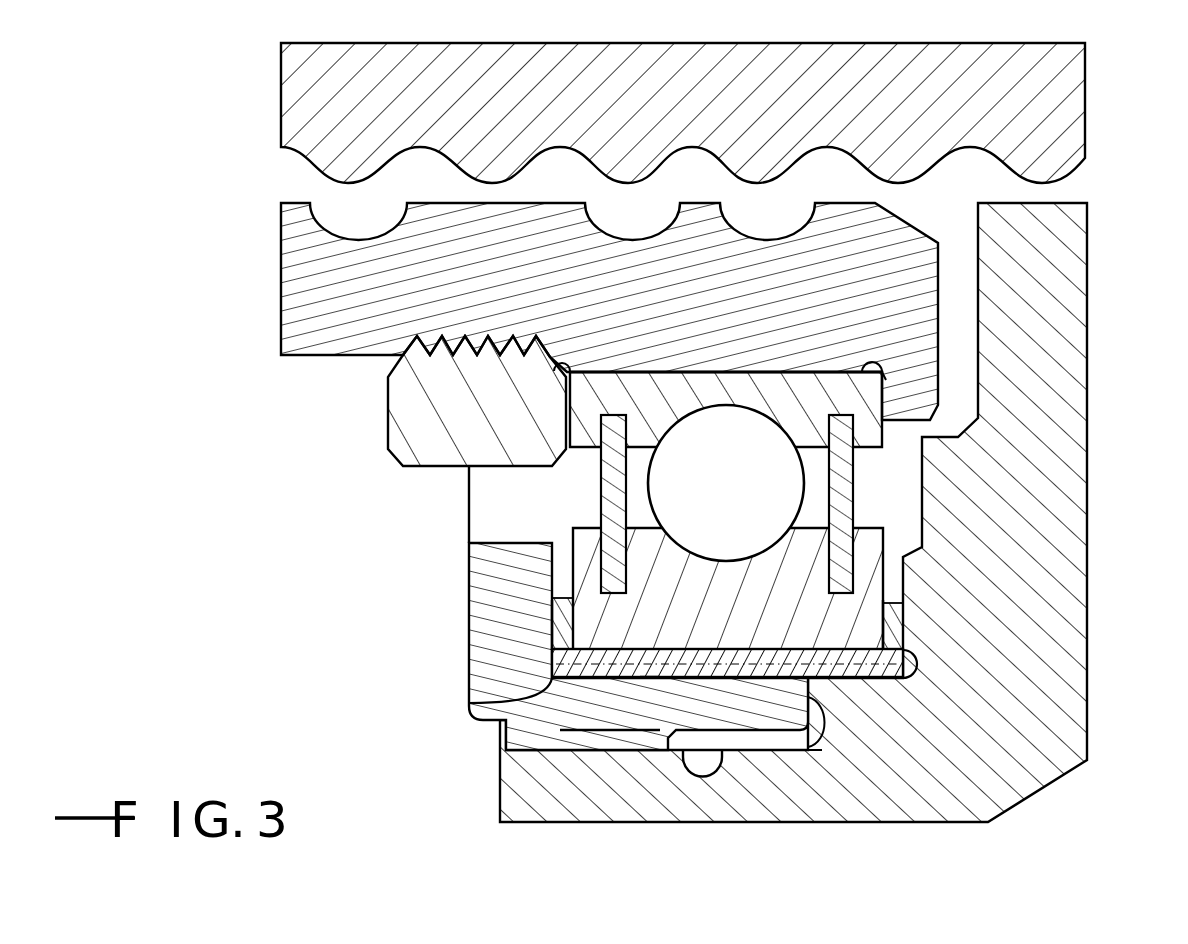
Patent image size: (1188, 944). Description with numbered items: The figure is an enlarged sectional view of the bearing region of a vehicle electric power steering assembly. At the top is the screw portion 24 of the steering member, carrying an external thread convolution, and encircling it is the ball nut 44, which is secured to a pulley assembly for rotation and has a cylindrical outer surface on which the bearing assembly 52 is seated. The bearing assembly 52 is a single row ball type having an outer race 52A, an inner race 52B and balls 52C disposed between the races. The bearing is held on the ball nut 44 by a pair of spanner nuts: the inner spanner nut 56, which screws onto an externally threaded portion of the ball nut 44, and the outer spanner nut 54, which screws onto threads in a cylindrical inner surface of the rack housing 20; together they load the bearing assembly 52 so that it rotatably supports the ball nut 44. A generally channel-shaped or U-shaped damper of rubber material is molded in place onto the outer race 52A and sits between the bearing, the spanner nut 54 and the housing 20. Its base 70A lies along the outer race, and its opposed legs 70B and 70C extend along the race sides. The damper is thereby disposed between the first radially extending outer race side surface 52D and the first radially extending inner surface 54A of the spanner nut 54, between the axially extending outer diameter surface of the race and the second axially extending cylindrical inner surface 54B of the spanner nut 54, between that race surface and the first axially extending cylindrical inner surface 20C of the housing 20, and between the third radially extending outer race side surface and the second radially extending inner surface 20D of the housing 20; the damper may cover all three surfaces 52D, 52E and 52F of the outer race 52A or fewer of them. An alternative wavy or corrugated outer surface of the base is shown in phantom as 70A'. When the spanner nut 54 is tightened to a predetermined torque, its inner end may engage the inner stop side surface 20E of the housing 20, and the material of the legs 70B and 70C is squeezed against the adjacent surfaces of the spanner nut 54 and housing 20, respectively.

The rack housing 20 is at (1097, 455).
The first generally axially extending cylindrical inner surface 20C is at (894, 680).
The second generally radially extending inner surface 20D is at (903, 605).
The inner stop side surface 20E is at (805, 700).
The screw portion 24 is at (1066, 126).
The ball nut 44 is at (320, 350).
The bearing assembly 52 is at (707, 362).
The outer race 52A is at (805, 632).
The inner race 52B is at (770, 383).
The balls 52C is at (758, 497).
The first generally radially extending outer race side surface 52D is at (552, 617).
The outer race surface 52E is at (863, 677).
The outer race surface 52F is at (903, 626).
The outer spanner nut 54 is at (543, 730).
The first generally radially extending inner surface 54A is at (550, 642).
The second generally axially extending cylindrical inner surface 54B is at (612, 677).
The inner spanner nut 56 is at (397, 462).
The base 70A is at (727, 681).
The outer surface of the base 70A' is at (635, 771).
The leg 70B is at (469, 703).
The leg 70C is at (918, 677).